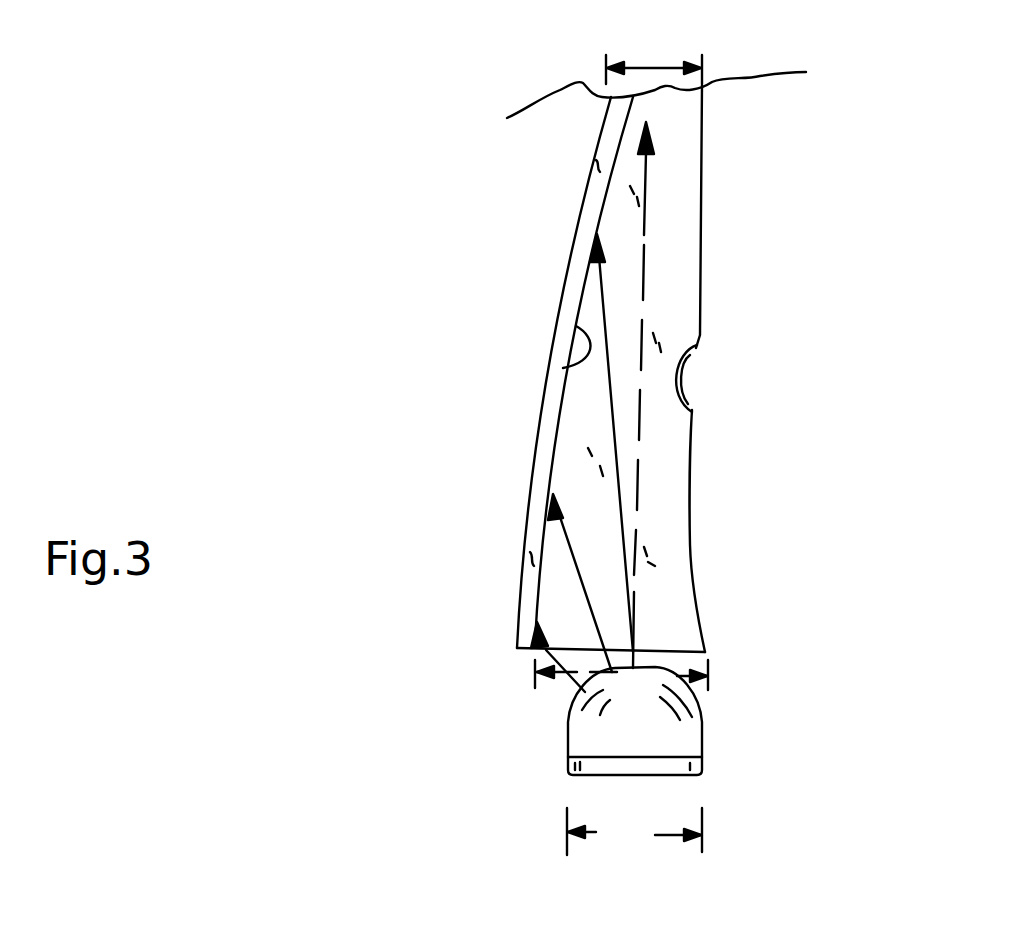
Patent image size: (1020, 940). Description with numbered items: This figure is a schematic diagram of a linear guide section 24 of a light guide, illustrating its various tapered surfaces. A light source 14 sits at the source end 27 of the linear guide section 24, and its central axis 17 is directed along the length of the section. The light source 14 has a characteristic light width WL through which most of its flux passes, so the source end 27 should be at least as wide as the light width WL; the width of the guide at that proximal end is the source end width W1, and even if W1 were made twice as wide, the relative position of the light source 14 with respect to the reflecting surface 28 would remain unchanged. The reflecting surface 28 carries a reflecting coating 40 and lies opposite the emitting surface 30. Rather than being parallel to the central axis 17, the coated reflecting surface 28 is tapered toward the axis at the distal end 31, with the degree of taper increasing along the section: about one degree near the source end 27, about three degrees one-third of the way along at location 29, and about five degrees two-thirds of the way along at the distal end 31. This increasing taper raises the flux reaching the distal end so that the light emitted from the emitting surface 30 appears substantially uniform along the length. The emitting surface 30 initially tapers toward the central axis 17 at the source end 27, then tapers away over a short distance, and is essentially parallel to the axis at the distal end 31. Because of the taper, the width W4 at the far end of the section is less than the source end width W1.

The light source 14 is at (648, 725).
The central axis 17 is at (643, 278).
The linear guide section 24 is at (680, 192).
The source end 27 is at (525, 607).
The reflecting surface 28 is at (560, 372).
The one-third point along the linear section 29 is at (533, 412).
The emitting surface 30 is at (693, 410).
The distal end 31 is at (610, 122).
The reflecting coating 40 is at (553, 353).
The source end width W1 is at (558, 680).
The first end section width adjacent the curved section W4 is at (647, 97).
The light width WL is at (634, 845).